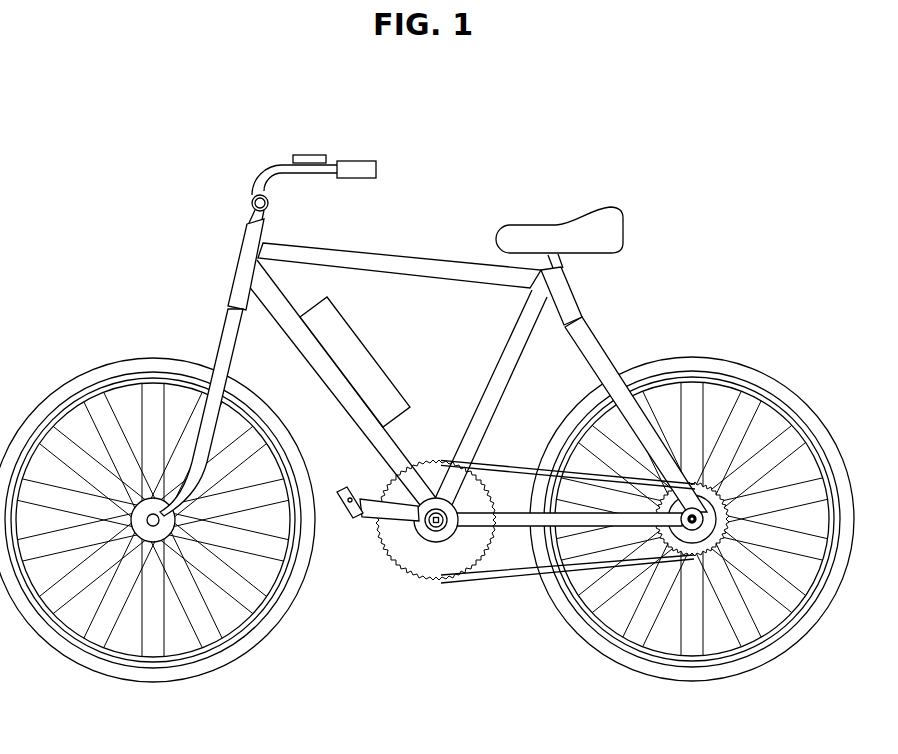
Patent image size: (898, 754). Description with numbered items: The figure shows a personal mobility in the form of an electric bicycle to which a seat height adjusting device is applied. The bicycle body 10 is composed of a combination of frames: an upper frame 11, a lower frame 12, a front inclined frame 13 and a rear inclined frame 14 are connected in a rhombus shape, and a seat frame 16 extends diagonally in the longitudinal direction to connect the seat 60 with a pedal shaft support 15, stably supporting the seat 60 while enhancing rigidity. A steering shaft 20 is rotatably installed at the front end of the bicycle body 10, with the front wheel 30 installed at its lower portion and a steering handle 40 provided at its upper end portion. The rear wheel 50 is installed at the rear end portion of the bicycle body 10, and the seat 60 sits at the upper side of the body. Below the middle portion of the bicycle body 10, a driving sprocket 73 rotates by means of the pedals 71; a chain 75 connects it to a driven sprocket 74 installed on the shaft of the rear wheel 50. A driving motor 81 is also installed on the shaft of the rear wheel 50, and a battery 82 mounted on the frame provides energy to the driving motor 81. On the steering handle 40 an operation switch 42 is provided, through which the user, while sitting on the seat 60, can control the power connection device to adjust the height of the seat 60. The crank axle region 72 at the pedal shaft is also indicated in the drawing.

The bicycle body 10 is at (477, 404).
The upper frame 11 is at (350, 255).
The lower frame 12 is at (518, 528).
The front inclined frame 13 is at (367, 428).
The rear inclined frame 14 is at (590, 347).
The pedal shaft support 15 is at (420, 533).
The seat frame 16 is at (503, 352).
The steering shaft 20 is at (225, 333).
The front wheel 30 is at (63, 398).
The steering handle 40 is at (352, 161).
The operation switch 42 is at (300, 152).
The rear wheel 50 is at (708, 366).
The seat 60 is at (565, 230).
The pedals 71 is at (356, 514).
The crank axle 72 is at (432, 532).
The driving sprocket 73 is at (433, 471).
The driven sprocket 74 is at (705, 512).
The chain 75 is at (510, 462).
The driving motor 81 is at (712, 500).
The battery 82 is at (350, 348).